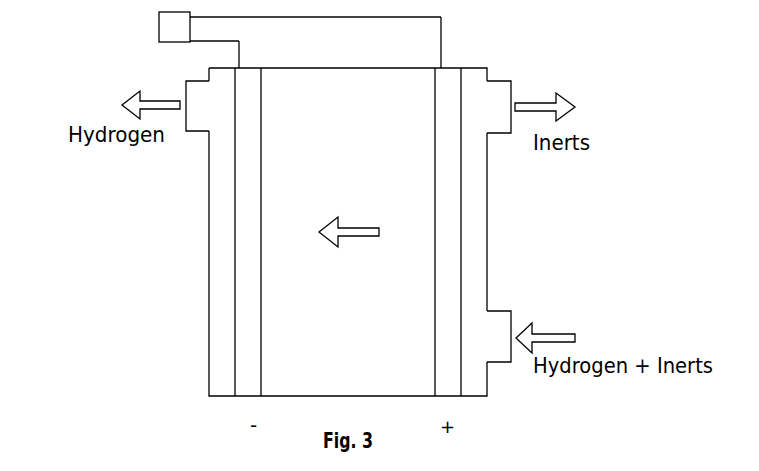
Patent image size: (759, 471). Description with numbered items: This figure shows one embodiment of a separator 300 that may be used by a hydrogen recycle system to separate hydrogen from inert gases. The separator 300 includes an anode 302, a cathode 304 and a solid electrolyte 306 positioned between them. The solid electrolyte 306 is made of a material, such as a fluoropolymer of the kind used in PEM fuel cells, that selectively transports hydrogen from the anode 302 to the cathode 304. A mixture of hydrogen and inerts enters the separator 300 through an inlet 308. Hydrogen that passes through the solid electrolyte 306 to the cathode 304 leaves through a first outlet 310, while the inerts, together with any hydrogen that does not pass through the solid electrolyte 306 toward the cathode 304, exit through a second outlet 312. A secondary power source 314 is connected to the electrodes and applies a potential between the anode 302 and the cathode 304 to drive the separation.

The separator 300 is at (503, 35).
The anode 302 is at (449, 66).
The cathode 304 is at (246, 67).
The solid electrolyte 306 is at (346, 66).
The inlet 308 is at (488, 310).
The first outlet 310 is at (209, 80).
The second outlet 312 is at (490, 73).
The secondary power source 314 is at (159, 35).